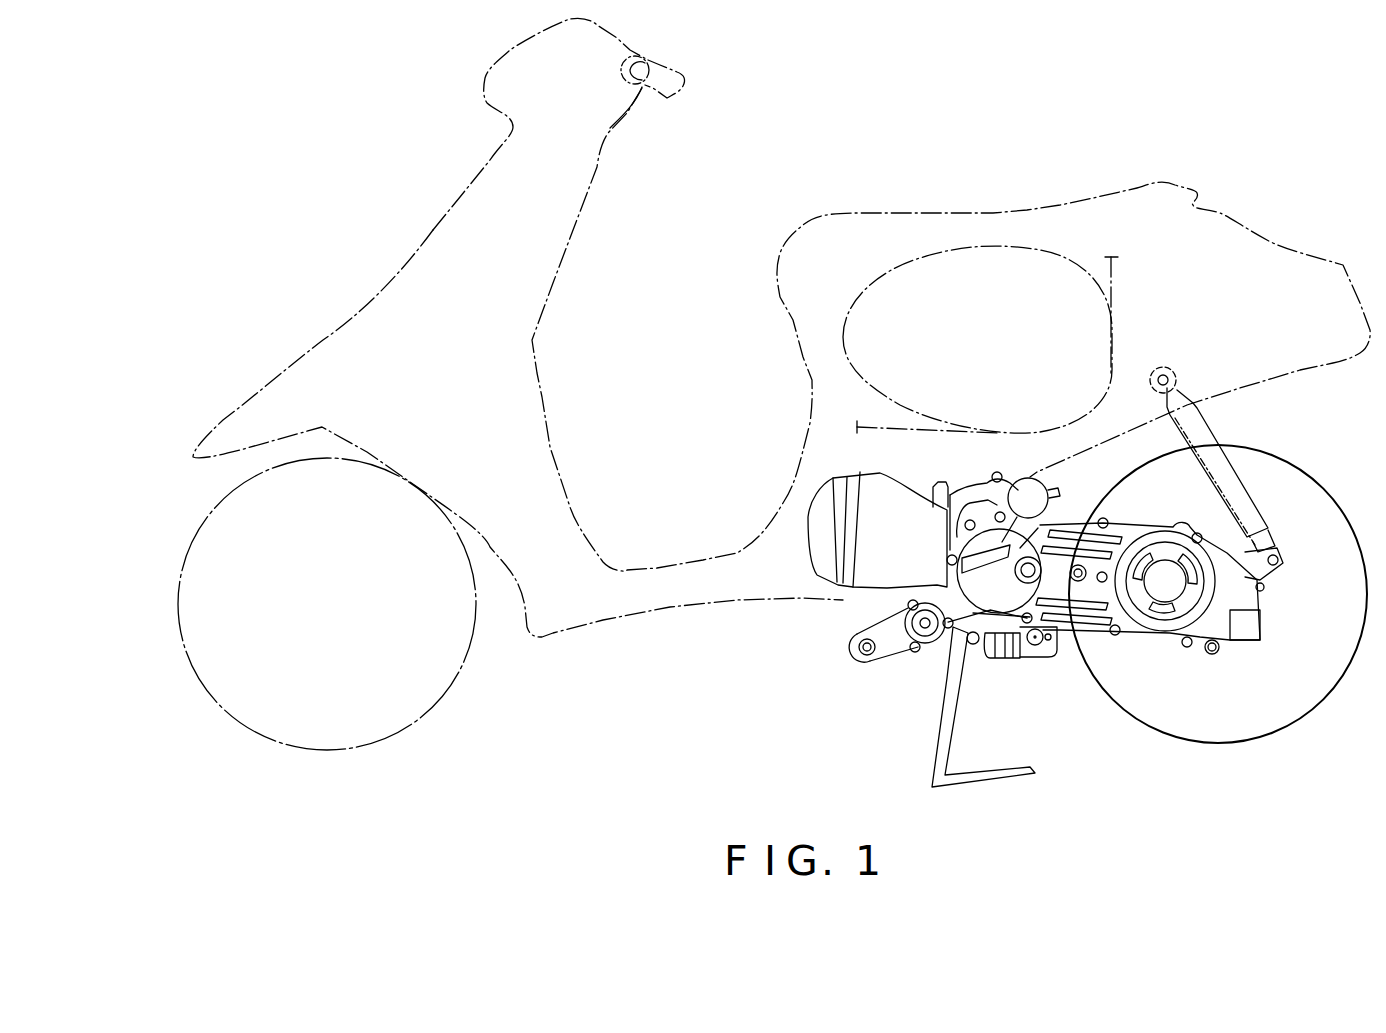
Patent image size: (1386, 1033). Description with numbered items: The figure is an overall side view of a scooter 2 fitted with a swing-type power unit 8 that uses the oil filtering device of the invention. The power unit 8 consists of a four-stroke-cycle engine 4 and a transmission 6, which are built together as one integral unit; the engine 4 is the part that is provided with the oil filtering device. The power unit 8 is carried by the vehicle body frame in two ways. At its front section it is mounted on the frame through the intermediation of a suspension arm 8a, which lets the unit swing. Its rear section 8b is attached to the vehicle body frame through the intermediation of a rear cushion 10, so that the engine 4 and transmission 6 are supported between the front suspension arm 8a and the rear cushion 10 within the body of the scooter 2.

The scooter 2 is at (937, 215).
The four-stroke-cycle engine 4 is at (852, 578).
The transmission 6 is at (1150, 610).
The swing-type power unit 8 is at (1245, 630).
The suspension arm 8a is at (887, 660).
The rear section 8b is at (1268, 587).
The rear cushion 10 is at (1190, 418).